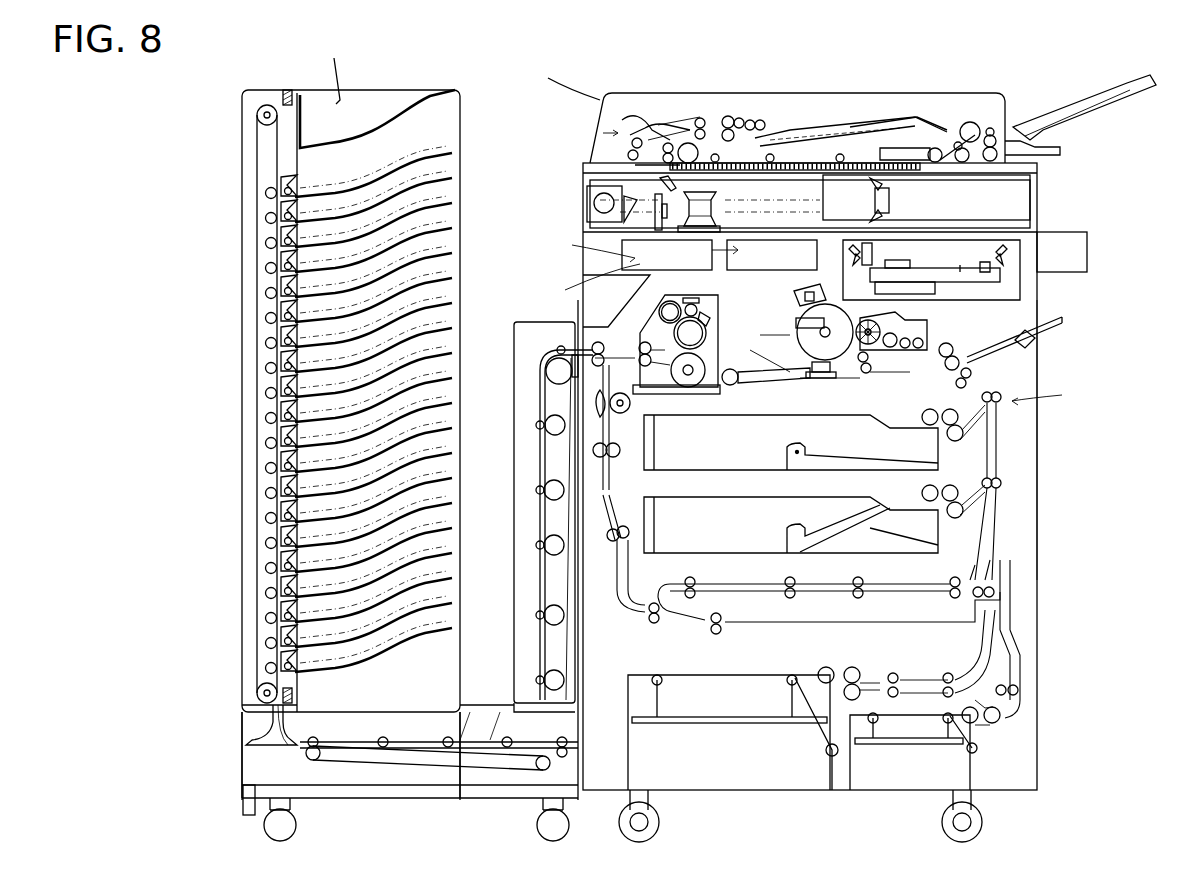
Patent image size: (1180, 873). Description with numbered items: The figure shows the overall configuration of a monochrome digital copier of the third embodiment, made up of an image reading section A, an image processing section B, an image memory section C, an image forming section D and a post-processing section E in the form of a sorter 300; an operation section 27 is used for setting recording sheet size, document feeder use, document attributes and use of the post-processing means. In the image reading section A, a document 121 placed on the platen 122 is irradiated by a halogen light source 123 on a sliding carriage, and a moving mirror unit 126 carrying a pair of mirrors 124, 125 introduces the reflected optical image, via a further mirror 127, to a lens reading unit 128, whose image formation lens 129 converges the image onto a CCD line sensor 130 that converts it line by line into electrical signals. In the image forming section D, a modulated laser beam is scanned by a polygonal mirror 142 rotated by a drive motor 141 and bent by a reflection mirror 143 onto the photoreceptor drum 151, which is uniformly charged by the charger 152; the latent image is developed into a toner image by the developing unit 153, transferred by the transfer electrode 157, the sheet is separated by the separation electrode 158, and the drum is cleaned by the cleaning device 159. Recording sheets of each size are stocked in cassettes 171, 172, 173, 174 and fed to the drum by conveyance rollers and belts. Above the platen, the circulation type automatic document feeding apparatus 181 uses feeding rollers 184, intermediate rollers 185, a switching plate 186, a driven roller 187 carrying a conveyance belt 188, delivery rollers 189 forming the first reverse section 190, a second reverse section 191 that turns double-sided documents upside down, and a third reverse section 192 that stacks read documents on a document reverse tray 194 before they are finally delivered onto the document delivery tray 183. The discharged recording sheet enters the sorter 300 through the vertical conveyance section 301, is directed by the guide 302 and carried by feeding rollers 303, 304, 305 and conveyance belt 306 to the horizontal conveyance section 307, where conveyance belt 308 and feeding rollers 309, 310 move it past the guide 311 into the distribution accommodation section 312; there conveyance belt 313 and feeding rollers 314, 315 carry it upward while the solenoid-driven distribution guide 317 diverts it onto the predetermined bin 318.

The operation section 27 is at (1090, 268).
The document 121 is at (848, 160).
The platen 122 is at (885, 148).
The halogen light source 123 is at (640, 180).
The mirror 124 is at (892, 185).
The mirror 125 is at (1000, 228).
The moving mirror unit 126 is at (892, 217).
The mirror 127 is at (658, 182).
The lens reading unit 128 is at (730, 226).
The image formation lens 129 is at (718, 200).
The CCD line sensor 130 is at (583, 212).
The drive motor 141 is at (950, 290).
The polygonal mirror 142 is at (1062, 252).
The reflection mirror 143 is at (681, 280).
The photoreceptor drum 151 is at (880, 310).
The charger 152 is at (795, 298).
The developing unit 153 is at (975, 365).
The transfer electrode 157 is at (848, 374).
The separation electrode 158 is at (815, 372).
The cleaning device 159 is at (805, 322).
The cassette 171 is at (752, 432).
The cassette 172 is at (663, 538).
The cassette 173 is at (725, 778).
The cassette 174 is at (890, 778).
The automatic document feeding apparatus 181 is at (600, 110).
The document delivery tray 183 is at (1120, 100).
The feeding rollers 184 is at (730, 115).
The intermediate rollers 185 is at (702, 118).
The switching plate 186 is at (692, 143).
The driven roller 187 is at (940, 148).
The conveyance belt 188 is at (880, 118).
The delivery rollers 189 is at (1058, 152).
The first reverse section 190 is at (660, 120).
The second reverse section 191 is at (630, 120).
The third reverse section 192 is at (993, 118).
The document reverse tray 194 is at (952, 130).
The sorter 300 is at (380, 100).
The vertical conveyance section 301 is at (525, 334).
The guide 302 is at (545, 362).
The feeding roller 303 is at (555, 375).
The feeding roller 304 is at (538, 425).
The feeding roller 305 is at (555, 432).
The conveyance belt 306 is at (560, 642).
The horizontal conveyance section 307 is at (482, 720).
The conveyance belt 308 is at (412, 742).
The feeding roller 309 is at (315, 762).
The feeding roller 310 is at (318, 740).
The guide 311 is at (285, 722).
The distribution accommodation section 312 is at (243, 135).
The conveyance belt 313 is at (257, 160).
The feeding roller 314 is at (290, 205).
The feeding roller 315 is at (265, 195).
The distribution guide 317 is at (283, 182).
The bin 318 is at (435, 125).